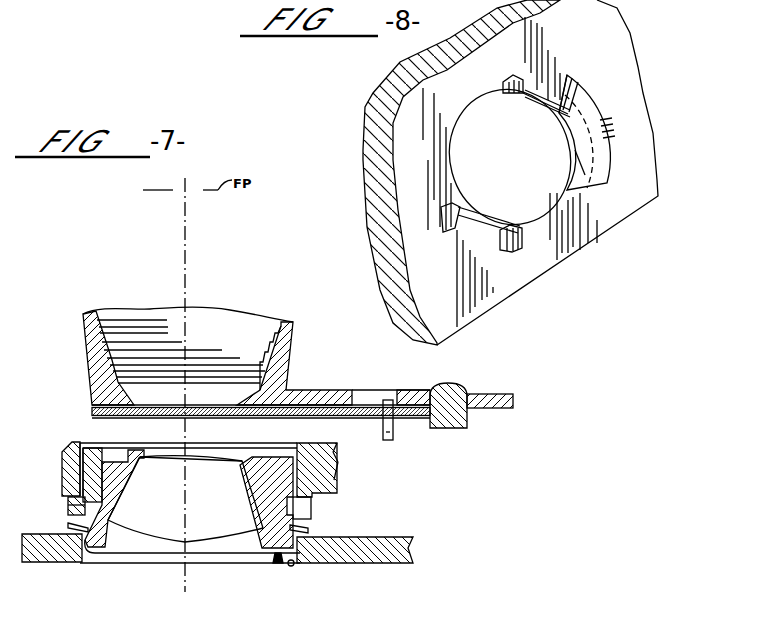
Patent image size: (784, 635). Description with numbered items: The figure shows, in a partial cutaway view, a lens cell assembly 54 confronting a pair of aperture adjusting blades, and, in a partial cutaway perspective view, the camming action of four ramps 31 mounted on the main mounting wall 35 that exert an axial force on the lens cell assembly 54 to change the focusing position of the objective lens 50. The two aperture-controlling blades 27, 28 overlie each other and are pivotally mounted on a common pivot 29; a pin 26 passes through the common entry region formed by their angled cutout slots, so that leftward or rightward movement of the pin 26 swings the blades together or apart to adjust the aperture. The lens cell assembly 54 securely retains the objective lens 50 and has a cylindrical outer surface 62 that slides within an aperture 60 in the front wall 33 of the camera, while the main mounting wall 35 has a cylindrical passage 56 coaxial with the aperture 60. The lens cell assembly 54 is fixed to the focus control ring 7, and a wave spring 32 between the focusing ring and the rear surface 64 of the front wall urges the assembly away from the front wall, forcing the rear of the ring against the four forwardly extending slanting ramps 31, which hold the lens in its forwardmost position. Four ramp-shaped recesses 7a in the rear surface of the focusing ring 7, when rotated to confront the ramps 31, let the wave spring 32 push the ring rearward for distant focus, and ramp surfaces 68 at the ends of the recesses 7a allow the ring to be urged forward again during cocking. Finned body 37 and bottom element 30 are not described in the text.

In FIG. 7, the focus control ring 7 is at (67, 506).
In FIG. 8, the focus control ring 7 is at (595, 98).
In FIG. 8, the ramp-shaped recess 7a is at (568, 162).
In FIG. 7, the pin 26 is at (393, 432).
In FIG. 7, the aperture-controlling blade 27 is at (92, 413).
In FIG. 7, the aperture-controlling blade 28 is at (92, 408).
In FIG. 7, the common pivot 29 is at (445, 385).
In FIG. 7, the housing bottom 30 is at (176, 556).
In FIG. 7, the slanting ramp 31 is at (67, 493).
In FIG. 8, the slanting ramp 31 is at (503, 88).
In FIG. 7, the wave spring 32 is at (70, 525).
In FIG. 7, the front wall 33 is at (62, 565).
In FIG. 7, the main mounting wall 35 is at (62, 463).
In FIG. 8, the main mounting wall 35 is at (372, 176).
In FIG. 7, the finned body 37 is at (98, 386).
In FIG. 7, the objective lens 50 is at (148, 540).
In FIG. 7, the lens cell assembly 54 is at (278, 565).
In FIG. 7, the cylindrical passage 56 is at (85, 453).
In FIG. 7, the aperture 60 is at (292, 566).
In FIG. 7, the cylindrical outer surface 62 is at (88, 557).
In FIG. 7, the rear surface of the front wall 64 is at (398, 538).
In FIG. 8, the ramp surface 68 is at (573, 140).